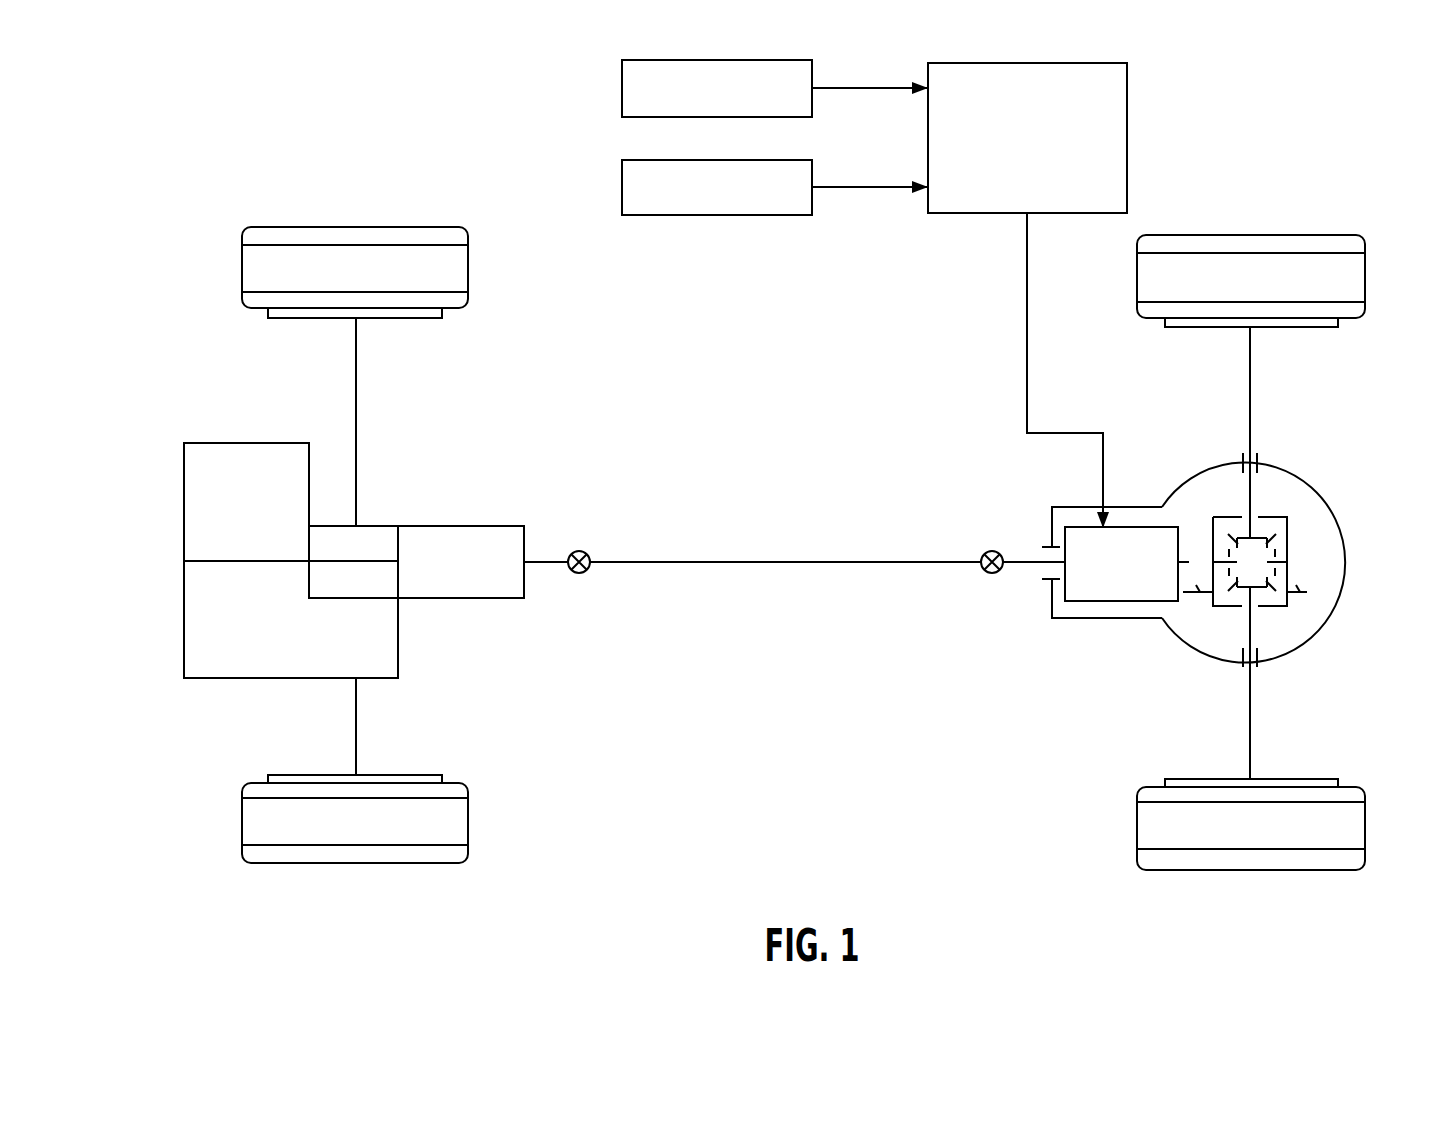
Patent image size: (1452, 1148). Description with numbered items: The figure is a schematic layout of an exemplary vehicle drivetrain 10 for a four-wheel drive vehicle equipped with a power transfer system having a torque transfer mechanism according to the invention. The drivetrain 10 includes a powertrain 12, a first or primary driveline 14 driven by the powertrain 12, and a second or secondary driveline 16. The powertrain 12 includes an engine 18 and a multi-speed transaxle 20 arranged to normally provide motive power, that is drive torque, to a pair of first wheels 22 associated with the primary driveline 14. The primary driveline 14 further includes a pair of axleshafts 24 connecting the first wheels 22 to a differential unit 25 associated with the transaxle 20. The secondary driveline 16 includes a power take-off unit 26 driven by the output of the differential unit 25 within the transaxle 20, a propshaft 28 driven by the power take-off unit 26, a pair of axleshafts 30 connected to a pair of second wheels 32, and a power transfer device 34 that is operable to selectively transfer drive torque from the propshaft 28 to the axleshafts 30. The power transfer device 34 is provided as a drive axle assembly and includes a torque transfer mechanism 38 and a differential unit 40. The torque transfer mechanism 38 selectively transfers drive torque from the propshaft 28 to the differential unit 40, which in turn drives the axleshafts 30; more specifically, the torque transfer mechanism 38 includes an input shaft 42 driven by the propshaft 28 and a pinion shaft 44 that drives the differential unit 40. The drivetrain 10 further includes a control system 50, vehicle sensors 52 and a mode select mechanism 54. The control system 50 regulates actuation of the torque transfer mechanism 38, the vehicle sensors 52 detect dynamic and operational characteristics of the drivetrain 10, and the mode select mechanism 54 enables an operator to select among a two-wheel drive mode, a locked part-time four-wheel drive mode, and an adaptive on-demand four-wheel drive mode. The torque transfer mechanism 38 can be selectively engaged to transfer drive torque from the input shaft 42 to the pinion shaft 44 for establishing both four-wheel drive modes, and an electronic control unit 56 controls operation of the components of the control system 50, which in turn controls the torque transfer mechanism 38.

The vehicle drivetrain 10 is at (817, 677).
The powertrain 12 is at (223, 705).
The primary driveline 14 is at (428, 465).
The secondary driveline 16 is at (1012, 618).
The engine 18 is at (234, 511).
The multi-speed transaxle 20 is at (271, 651).
The first wheels 22 is at (450, 266).
The axleshafts 24 is at (356, 374).
The differential unit 25 is at (340, 576).
The power take-off unit 26 is at (448, 576).
The propshaft 28 is at (738, 563).
The axleshafts 30 is at (1251, 390).
The second wheels 32 is at (1337, 270).
The power transfer device 34 is at (1172, 700).
The torque transfer mechanism 38 is at (1107, 610).
The differential unit 40 is at (1288, 553).
The input shaft 42 is at (1030, 557).
The pinion shaft 44 is at (1187, 532).
The control system 50 is at (843, 308).
The vehicle sensors 52 is at (630, 102).
The mode select mechanism 54 is at (717, 215).
The electronic control unit 56 is at (1114, 90).